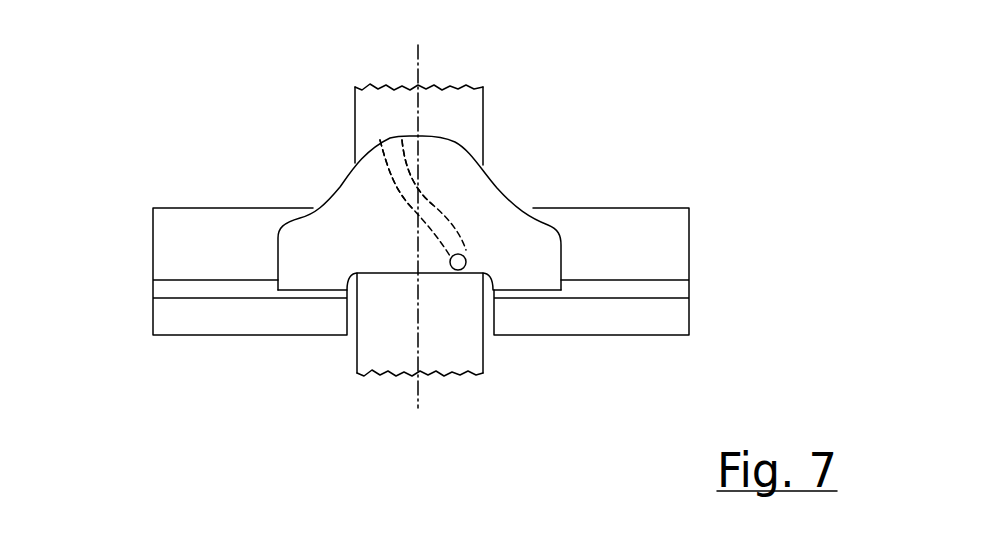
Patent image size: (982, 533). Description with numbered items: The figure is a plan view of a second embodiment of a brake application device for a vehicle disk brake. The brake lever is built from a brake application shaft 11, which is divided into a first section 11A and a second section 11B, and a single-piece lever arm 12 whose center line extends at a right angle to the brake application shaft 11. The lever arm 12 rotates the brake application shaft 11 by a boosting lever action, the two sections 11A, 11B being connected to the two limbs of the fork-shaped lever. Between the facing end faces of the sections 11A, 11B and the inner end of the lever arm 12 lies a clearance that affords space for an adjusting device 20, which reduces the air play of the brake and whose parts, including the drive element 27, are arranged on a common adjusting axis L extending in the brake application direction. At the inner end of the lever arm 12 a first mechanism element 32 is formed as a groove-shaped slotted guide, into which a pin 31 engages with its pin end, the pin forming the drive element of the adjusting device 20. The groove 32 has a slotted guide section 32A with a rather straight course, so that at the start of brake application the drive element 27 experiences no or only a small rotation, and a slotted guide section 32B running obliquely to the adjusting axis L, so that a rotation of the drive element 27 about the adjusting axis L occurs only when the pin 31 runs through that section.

The brake application shaft 11 is at (385, 313).
The first section of the brake application shaft 11A is at (210, 273).
The second section of the brake application shaft 11B is at (653, 268).
The lever arm 12 is at (362, 200).
The adjusting device 20 is at (502, 115).
The drive element 27 is at (483, 138).
The pin 31 is at (455, 270).
The first mechanism element 32 is at (430, 188).
The slotted guide section 32A is at (466, 253).
The slotted guide section 32B is at (440, 208).
The adjusting axis L is at (420, 392).